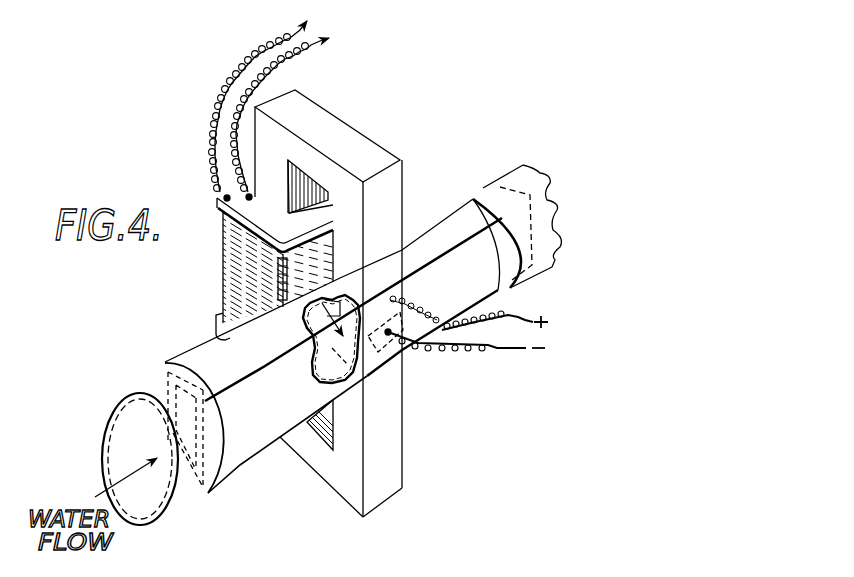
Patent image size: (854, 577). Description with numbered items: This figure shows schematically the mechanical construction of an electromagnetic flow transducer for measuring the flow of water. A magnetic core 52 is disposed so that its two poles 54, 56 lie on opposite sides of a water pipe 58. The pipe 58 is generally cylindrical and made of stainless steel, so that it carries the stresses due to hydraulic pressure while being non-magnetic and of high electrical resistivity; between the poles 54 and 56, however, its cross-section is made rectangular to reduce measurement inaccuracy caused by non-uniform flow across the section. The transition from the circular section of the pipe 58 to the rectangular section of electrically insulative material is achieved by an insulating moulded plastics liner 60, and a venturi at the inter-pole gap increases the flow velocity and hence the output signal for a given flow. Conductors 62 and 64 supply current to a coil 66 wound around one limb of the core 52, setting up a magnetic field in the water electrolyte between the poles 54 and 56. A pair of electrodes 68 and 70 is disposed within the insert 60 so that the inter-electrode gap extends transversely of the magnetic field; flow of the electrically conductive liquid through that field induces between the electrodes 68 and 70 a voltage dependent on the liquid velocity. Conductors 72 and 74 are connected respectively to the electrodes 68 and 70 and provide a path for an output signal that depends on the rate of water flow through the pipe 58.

The magnetic core 52 is at (399, 184).
The pole 54 is at (350, 283).
The pole 56 is at (392, 374).
The water pipe 58 is at (192, 509).
The insulating moulded plastics liner 60 is at (278, 345).
The conductor 62 is at (284, 38).
The conductor 64 is at (329, 43).
The coil 66 is at (219, 293).
The electrode 68 is at (310, 370).
The electrode 70 is at (415, 350).
The conductor 72 is at (524, 320).
The conductor 74 is at (512, 352).